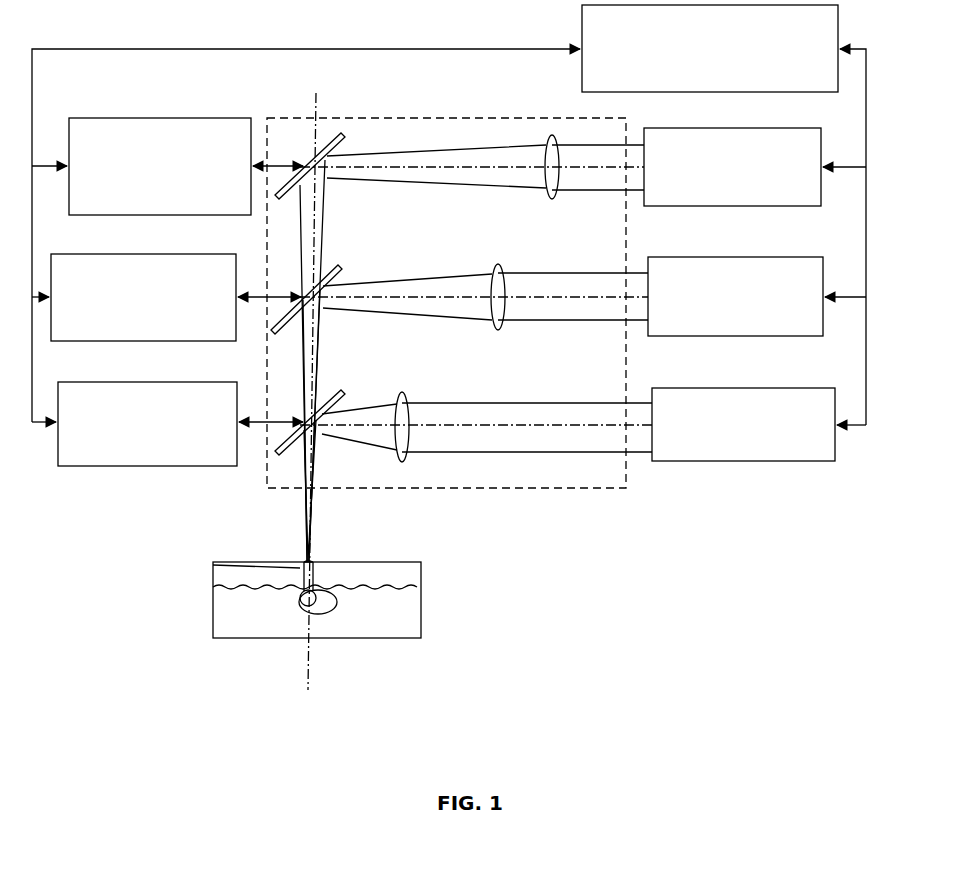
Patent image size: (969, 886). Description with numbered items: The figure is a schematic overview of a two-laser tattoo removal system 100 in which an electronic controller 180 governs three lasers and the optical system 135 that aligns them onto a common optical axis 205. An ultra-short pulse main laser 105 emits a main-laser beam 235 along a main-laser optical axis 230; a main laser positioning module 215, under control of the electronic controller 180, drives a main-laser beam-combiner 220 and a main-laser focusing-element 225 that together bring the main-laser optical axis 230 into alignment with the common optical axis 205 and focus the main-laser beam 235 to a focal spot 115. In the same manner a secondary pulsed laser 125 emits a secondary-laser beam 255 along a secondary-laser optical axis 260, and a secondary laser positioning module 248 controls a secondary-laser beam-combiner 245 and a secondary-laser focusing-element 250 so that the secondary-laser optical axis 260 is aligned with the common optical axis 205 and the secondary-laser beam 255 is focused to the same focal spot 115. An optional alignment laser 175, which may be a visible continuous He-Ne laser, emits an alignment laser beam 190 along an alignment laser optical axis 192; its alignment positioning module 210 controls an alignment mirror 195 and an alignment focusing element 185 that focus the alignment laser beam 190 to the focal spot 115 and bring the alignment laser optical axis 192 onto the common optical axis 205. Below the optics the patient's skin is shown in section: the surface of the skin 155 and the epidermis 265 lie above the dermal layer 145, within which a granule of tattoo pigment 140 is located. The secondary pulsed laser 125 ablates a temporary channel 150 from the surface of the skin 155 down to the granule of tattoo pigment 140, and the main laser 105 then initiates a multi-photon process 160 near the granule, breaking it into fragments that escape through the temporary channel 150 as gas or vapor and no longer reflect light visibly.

The laser processing system 100 is at (577, 730).
The ultra-short pulse main laser 105 is at (743, 424).
The focal spot 115 is at (311, 564).
The secondary pulsed laser 125 is at (735, 296).
The optical system 135 is at (628, 492).
The granule of tattoo pigment 140 is at (332, 611).
The dermal layer 145 is at (213, 605).
The temporary channel 150 is at (304, 566).
The surface of the skin 155 is at (213, 564).
The multi-photon process 160 is at (305, 606).
The alignment laser 175 is at (732, 167).
The electronic controller 180 is at (449, 215).
The alignment focusing element 185 is at (548, 136).
The alignment laser beam 190 is at (462, 145).
The alignment laser optical axis 192 is at (412, 168).
The alignment mirror 195 is at (343, 132).
The common optical axis 205 is at (313, 114).
The alignment positioning module 210 is at (186, 166).
The main laser positioning module 215 is at (180, 424).
The main-laser beam-combiner 220 is at (277, 452).
The main-laser focusing-element 225 is at (405, 463).
The main-laser optical axis 230 is at (555, 440).
The main-laser beam 235 is at (460, 454).
The secondary-laser beam-combiner 245 is at (302, 294).
The secondary laser positioning module 248 is at (176, 297).
The secondary-laser focusing-element 250 is at (496, 264).
The secondary-laser beam 255 is at (582, 272).
The secondary-laser optical axis 260 is at (534, 296).
The epidermis 265 is at (421, 578).